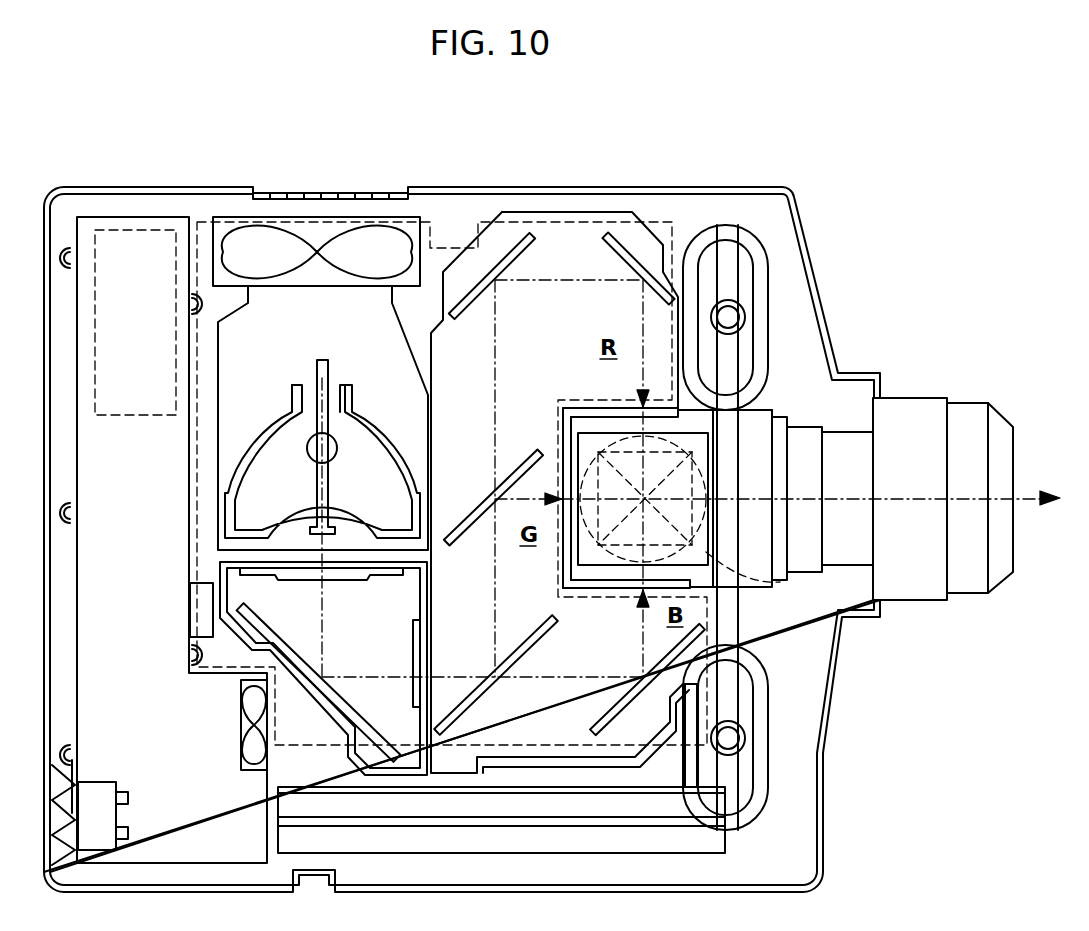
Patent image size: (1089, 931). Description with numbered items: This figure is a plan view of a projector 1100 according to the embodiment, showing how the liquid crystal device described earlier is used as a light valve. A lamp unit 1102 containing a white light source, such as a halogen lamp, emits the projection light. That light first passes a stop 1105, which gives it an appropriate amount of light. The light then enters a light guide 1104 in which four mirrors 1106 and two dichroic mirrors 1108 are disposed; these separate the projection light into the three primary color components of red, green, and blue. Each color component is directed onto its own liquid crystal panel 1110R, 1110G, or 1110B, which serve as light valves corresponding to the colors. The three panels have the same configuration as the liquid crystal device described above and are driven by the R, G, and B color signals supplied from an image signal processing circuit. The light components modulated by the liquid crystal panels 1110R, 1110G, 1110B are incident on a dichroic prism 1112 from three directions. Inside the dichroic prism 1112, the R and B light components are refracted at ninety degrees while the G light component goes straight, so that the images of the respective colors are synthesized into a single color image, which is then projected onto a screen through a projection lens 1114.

The projector 1100 is at (829, 193).
The lamp unit 1102 is at (373, 342).
The light guide 1104 is at (505, 213).
The stop 1105 is at (355, 578).
The mirrors 1106 is at (620, 257).
The dichroic mirrors 1108 is at (527, 643).
The liquid crystal panel 1110R is at (605, 408).
The liquid crystal panel 1110G is at (571, 467).
The liquid crystal panel 1110B is at (605, 581).
The dichroic prism 1112 is at (771, 581).
The projection lens 1114 is at (978, 410).